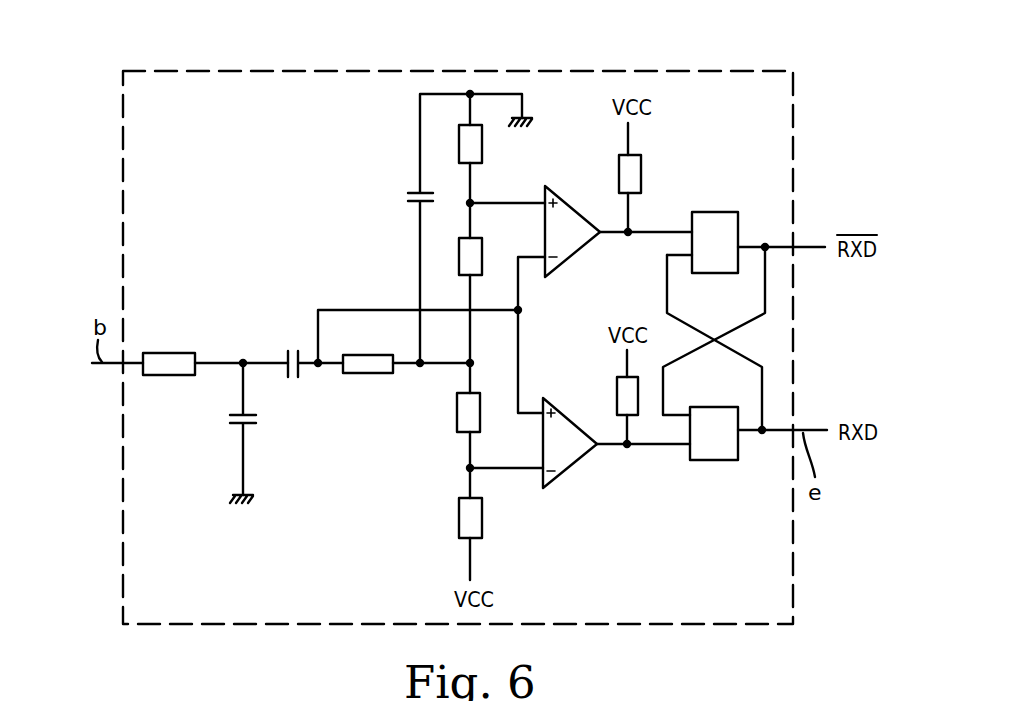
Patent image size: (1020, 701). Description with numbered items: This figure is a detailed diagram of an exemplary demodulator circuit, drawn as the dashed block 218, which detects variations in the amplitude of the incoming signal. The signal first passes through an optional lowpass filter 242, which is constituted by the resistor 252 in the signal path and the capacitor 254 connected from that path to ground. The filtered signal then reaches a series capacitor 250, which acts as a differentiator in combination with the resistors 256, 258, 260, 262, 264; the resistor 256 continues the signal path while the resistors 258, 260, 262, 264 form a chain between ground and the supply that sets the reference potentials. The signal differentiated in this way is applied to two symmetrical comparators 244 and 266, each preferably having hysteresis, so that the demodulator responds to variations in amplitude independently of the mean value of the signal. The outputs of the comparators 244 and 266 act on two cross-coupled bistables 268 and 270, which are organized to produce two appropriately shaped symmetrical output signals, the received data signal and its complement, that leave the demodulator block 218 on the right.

The receiver circuit 218 is at (695, 67).
The lowpass filter 242 is at (165, 322).
The comparator 244 is at (565, 468).
The series capacitor 250 is at (280, 377).
The resistor 252 is at (170, 376).
The capacitor 254 is at (230, 427).
The resistor 256 is at (360, 375).
The resistor 258 is at (459, 130).
The resistor 260 is at (459, 250).
The resistor 262 is at (457, 418).
The resistor 264 is at (459, 512).
The comparator 266 is at (572, 203).
The bistable 268 is at (713, 460).
The bistable 270 is at (713, 212).